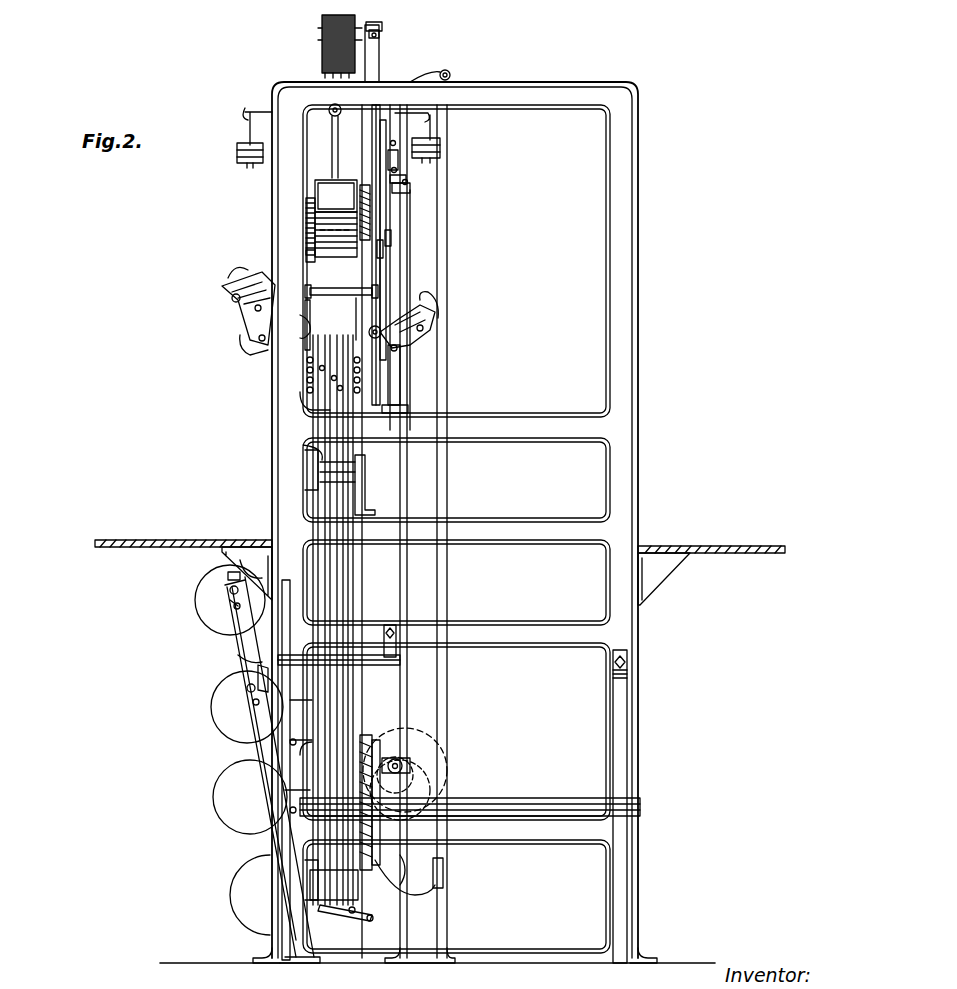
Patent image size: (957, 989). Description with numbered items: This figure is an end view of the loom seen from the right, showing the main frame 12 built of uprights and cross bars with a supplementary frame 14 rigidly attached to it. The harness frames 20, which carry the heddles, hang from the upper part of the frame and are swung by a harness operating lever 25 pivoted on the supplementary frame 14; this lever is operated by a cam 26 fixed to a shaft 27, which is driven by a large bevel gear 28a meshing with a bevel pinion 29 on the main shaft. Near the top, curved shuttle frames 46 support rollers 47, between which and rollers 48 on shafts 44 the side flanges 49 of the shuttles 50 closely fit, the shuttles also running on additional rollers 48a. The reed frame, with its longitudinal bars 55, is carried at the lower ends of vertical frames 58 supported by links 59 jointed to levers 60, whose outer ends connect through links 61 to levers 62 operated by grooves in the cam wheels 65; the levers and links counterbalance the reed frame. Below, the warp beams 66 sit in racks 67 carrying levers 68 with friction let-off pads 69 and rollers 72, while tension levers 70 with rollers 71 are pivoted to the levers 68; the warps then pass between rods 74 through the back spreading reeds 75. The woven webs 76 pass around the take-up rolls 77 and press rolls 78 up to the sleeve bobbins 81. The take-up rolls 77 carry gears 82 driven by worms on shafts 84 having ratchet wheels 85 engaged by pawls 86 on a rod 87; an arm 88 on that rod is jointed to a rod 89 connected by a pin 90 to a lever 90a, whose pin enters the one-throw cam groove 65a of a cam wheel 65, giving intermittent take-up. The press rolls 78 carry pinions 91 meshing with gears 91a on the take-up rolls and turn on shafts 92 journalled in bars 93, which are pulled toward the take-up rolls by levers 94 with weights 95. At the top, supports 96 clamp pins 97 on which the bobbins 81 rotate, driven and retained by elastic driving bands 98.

The main frame 12 is at (636, 300).
The supplementary frame 14 is at (285, 715).
The harness frame 20 is at (300, 395).
The harness operating lever 25 is at (330, 490).
The cam 26 is at (330, 848).
The shaft 27 is at (530, 797).
The bevel gear 28a is at (372, 750).
The bevel pinion 29 is at (410, 768).
The shaft 44 is at (381, 336).
The shuttle frame 46 is at (240, 310).
The roller 47 is at (358, 330).
The roller 48 is at (400, 362).
The additional roller 48a is at (262, 346).
The side flange 49 is at (232, 300).
The shuttle 50 is at (240, 270).
The longitudinal bar 55 is at (358, 350).
The vertical frame 58 is at (355, 298).
The link 59 is at (332, 140).
The lever 60 is at (428, 72).
The link 61 is at (448, 222).
The lever 62 is at (424, 880).
The cam wheel 65 is at (413, 768).
The cam groove 65a is at (470, 778).
The warp beam 66 is at (196, 612).
The rack 67 is at (255, 662).
The lever 68 is at (222, 582).
The friction let-off pad 69 is at (255, 556).
The tension lever 70 is at (330, 690).
The roller 71 is at (345, 918).
The roller 72 is at (372, 922).
The rod 74 is at (365, 474).
The back spreading reed 75 is at (303, 448).
The woven web 76 is at (323, 64).
The take-up roll 77 is at (330, 196).
The press roll 78 is at (330, 256).
The sleeve bobbin 81 is at (320, 40).
The gear 82 is at (386, 215).
The shaft 84 is at (370, 200).
The ratchet wheel 85 is at (372, 182).
The pawl 86 is at (386, 160).
The rod 87 is at (406, 175).
The arm 88 is at (410, 187).
The rod 89 is at (411, 254).
The pin 90 is at (440, 748).
The lever 90a is at (376, 740).
The pinion 91 is at (306, 250).
The gear 91a is at (306, 216).
The shaft 92 is at (381, 250).
The bar 93 is at (391, 236).
The lever 94 is at (258, 112).
The weight 95 is at (237, 155).
The support 96 is at (380, 60).
The pin 97 is at (380, 33).
The elastic driving band 98 is at (358, 80).